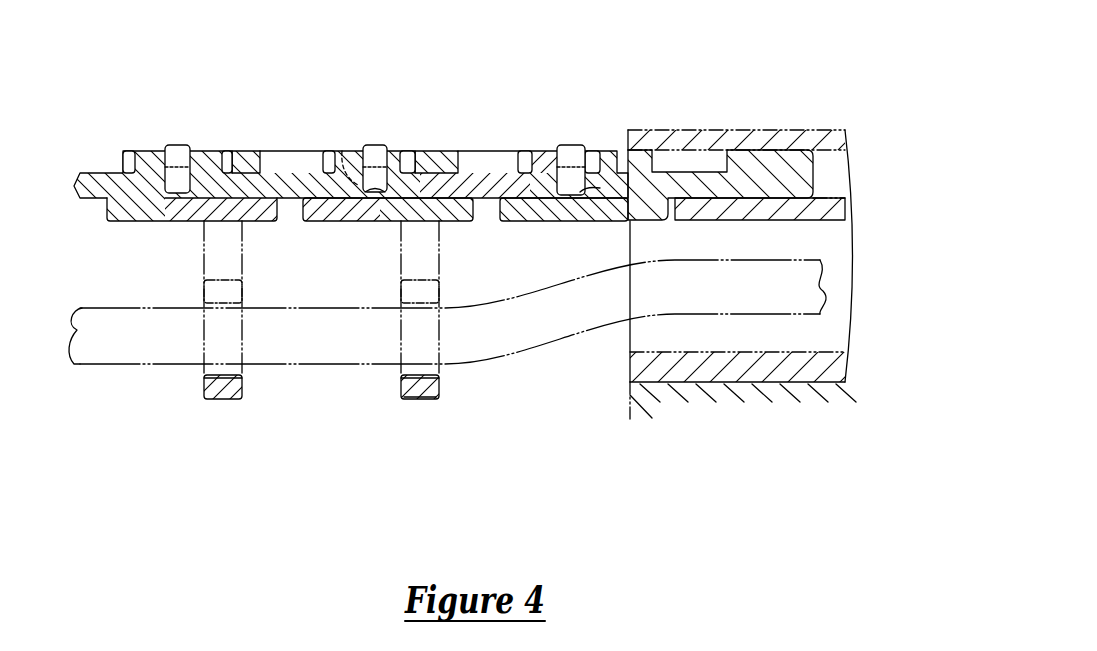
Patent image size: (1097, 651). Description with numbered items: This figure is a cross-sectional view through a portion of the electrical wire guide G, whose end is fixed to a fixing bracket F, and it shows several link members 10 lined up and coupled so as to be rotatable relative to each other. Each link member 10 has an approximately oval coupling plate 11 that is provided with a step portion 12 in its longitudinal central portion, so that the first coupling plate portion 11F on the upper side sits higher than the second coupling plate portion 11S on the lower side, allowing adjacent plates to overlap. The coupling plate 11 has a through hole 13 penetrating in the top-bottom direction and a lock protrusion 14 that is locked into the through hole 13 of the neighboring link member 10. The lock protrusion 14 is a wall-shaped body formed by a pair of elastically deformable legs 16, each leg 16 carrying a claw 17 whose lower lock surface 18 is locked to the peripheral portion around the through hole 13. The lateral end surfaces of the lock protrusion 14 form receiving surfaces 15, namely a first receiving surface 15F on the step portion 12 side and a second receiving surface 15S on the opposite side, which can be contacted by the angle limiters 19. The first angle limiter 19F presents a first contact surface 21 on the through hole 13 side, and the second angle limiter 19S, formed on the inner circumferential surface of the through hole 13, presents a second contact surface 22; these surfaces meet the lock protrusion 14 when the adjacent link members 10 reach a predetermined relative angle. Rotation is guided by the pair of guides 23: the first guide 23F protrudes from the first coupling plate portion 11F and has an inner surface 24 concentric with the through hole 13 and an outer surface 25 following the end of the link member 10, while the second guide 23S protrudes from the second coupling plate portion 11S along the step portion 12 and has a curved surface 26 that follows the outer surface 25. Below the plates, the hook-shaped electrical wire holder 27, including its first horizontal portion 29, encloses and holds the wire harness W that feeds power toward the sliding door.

The link member 10 is at (484, 180).
The coupling plate 11 is at (290, 351).
The first coupling plate portion 11F is at (167, 222).
The second coupling plate portion 11S is at (288, 222).
The step portion 12 is at (467, 222).
The through hole 13 is at (378, 160).
The lock protrusion 14 is at (374, 150).
The receiving surfaces 15 is at (172, 108).
The first receiving surface 15F is at (143, 160).
The second receiving surface 15S is at (198, 125).
The leg 16 is at (375, 190).
The claw 17 is at (372, 172).
The lock surface 18 is at (345, 160).
The angle limiter 19 is at (568, 116).
The first angle limiter 19F is at (540, 158).
The second angle limiter 19S is at (599, 196).
The first contact surface 21 is at (572, 145).
The second contact surface 22 is at (600, 190).
The guide 23 is at (248, 91).
The first guide 23F is at (212, 160).
The second guide 23S is at (246, 158).
The inner surface 24 is at (397, 152).
The outer surface 25 is at (447, 152).
The curved surface 26 is at (422, 153).
The electrical wire holder 27 is at (422, 397).
The first horizontal portion 29 is at (432, 395).
The fixing bracket F is at (813, 133).
The electrical wire guide G is at (75, 160).
The wire harness W is at (311, 357).